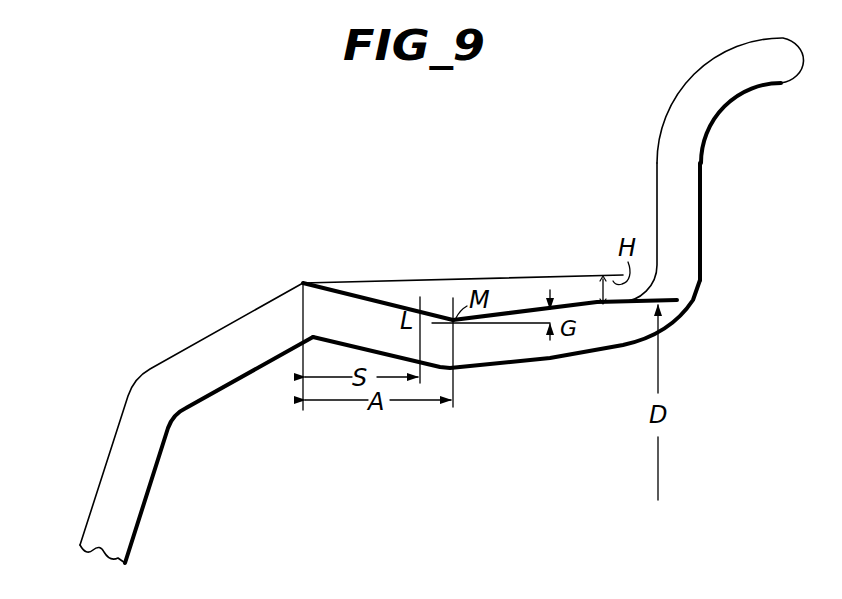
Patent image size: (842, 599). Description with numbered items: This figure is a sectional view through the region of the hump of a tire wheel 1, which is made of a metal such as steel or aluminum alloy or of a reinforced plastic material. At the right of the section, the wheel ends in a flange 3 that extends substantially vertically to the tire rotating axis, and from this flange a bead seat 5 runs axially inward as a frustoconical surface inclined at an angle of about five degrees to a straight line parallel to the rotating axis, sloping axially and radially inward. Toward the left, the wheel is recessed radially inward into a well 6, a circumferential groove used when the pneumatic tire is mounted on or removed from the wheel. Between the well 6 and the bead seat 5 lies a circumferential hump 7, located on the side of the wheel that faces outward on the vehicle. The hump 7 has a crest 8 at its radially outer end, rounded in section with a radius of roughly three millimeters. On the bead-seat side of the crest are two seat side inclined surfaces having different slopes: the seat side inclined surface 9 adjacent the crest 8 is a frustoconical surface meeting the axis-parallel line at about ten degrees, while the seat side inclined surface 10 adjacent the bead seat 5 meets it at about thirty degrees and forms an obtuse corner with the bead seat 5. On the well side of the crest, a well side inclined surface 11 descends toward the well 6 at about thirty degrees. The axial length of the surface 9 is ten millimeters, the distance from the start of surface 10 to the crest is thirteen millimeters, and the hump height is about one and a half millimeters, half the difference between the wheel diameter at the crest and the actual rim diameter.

The tire wheel 1 is at (713, 250).
The flange 3 is at (693, 158).
The bead seat 5 is at (510, 315).
The well 6 is at (80, 545).
The hump 7 is at (277, 283).
The crest 8 is at (303, 283).
The seat side inclined surface 9 is at (367, 297).
The seat side inclined surface 10 is at (440, 315).
The well side inclined surface 11 is at (208, 342).